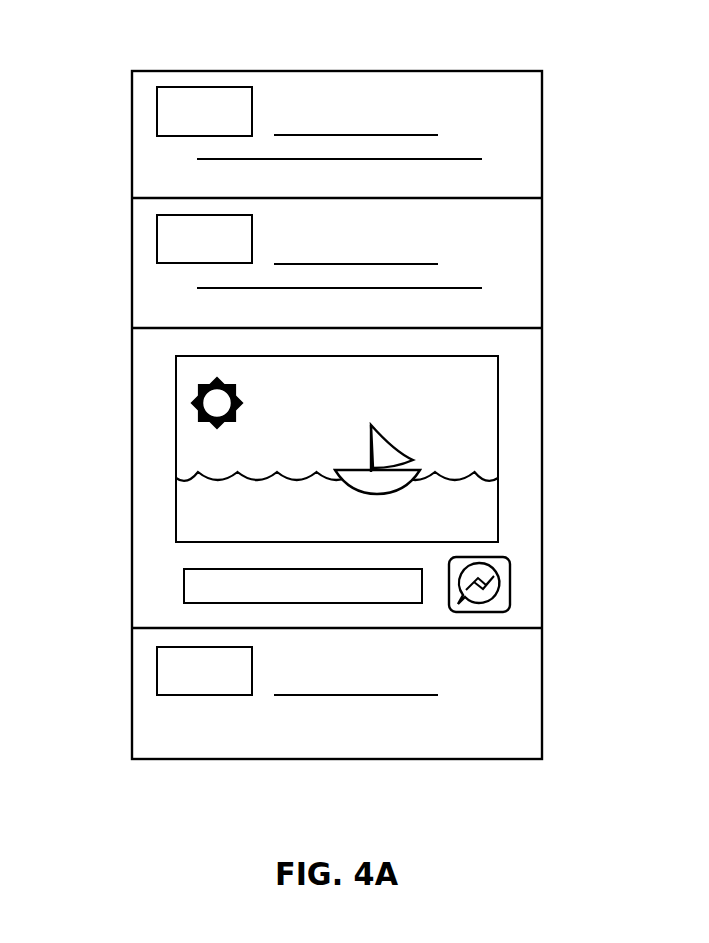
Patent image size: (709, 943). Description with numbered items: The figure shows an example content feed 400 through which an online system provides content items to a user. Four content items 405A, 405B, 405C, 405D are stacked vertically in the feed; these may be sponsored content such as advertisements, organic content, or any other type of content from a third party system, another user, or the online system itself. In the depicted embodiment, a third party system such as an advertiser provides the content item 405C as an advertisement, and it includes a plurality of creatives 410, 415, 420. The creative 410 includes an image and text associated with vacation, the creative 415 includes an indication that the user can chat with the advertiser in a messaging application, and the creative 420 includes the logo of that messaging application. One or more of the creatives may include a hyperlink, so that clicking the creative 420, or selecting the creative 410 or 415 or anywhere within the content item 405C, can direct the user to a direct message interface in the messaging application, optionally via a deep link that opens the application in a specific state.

The content feed 400 is at (172, 65).
The content item 405A is at (535, 137).
The content item 405B is at (535, 265).
The content item 405C is at (523, 352).
The content item 405D is at (535, 715).
The creative 410 is at (476, 453).
The creative 415 is at (190, 580).
The creative 420 is at (515, 587).